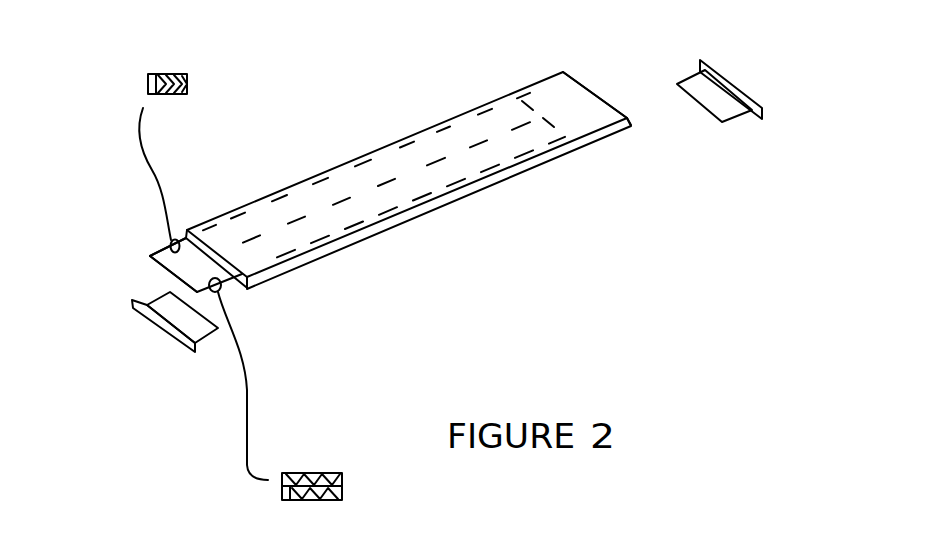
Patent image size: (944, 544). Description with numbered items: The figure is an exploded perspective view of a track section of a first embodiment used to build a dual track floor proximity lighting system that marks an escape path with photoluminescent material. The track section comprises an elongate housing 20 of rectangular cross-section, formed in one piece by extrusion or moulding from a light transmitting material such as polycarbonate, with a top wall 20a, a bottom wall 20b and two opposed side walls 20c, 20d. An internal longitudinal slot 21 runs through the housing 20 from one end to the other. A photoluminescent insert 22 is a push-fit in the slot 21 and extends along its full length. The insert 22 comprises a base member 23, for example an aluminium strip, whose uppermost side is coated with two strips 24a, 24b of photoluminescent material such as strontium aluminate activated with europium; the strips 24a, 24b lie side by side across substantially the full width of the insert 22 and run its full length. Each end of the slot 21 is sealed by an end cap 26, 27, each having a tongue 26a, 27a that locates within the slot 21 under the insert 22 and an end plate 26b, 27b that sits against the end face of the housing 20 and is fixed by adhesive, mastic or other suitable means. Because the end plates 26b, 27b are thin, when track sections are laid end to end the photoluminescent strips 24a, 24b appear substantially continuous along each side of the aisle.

The elongate housing 20 is at (390, 182).
The top wall 20a is at (550, 95).
The bottom wall 20b is at (543, 172).
The side wall 20c is at (289, 265).
The side wall 20d is at (186, 236).
The internal longitudinal slot 21 is at (245, 288).
The photoluminescent insert 22 is at (158, 242).
The base member 23 is at (188, 88).
The strip of photoluminescent material 24a is at (148, 78).
The strip of photoluminescent material 24b is at (173, 277).
The end cap 26 is at (150, 369).
The tongue 26a is at (199, 343).
The end plate 26b is at (153, 320).
The end cap 27 is at (727, 67).
The tongue 27a is at (680, 83).
The end plate 27b is at (748, 95).